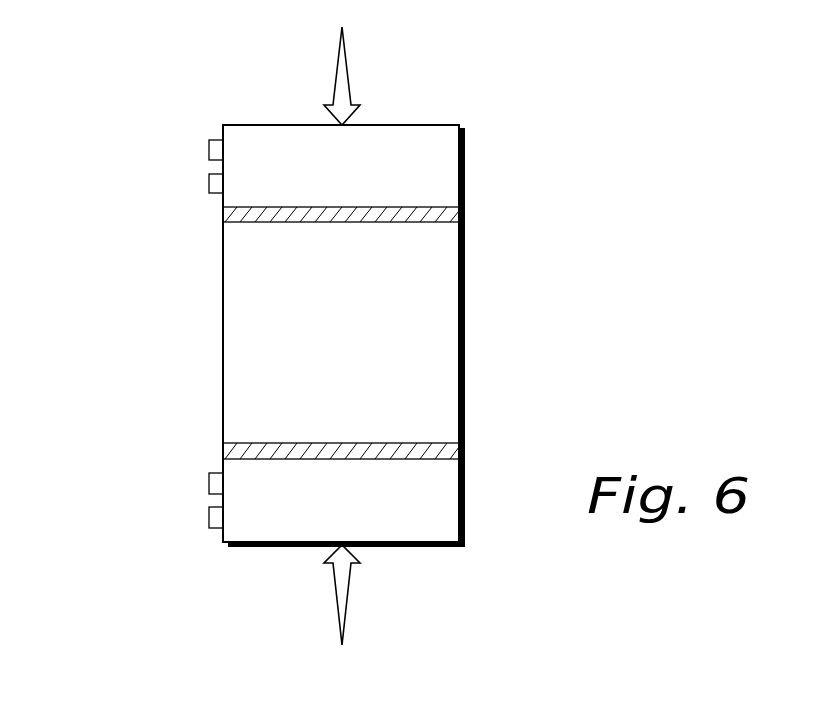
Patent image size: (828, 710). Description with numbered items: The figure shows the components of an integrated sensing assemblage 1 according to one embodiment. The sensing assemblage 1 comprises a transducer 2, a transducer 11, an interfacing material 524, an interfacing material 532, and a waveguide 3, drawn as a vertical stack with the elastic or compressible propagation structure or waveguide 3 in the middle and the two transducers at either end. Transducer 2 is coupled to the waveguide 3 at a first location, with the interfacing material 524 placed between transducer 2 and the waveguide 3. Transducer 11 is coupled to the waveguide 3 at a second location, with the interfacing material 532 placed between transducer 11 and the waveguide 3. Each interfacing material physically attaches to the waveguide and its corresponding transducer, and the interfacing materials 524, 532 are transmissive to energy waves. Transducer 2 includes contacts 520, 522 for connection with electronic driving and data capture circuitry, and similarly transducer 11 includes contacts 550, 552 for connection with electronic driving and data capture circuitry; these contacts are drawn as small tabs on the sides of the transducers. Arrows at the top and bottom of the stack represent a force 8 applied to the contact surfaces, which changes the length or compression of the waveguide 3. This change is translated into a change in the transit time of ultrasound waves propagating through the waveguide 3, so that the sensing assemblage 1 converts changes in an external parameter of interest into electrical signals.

The sensing assemblage 1 is at (208, 93).
The transducer 2 is at (391, 135).
The waveguide 3 is at (240, 346).
The force 8 is at (336, 92).
The transducer 11 is at (438, 510).
The contact 520 is at (213, 152).
The contact 522 is at (212, 188).
The interfacing material 524 is at (446, 212).
The interfacing material 532 is at (446, 452).
The contact 550 is at (213, 486).
The contact 552 is at (212, 520).